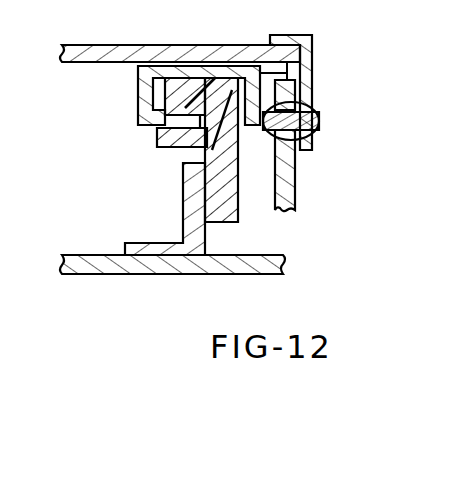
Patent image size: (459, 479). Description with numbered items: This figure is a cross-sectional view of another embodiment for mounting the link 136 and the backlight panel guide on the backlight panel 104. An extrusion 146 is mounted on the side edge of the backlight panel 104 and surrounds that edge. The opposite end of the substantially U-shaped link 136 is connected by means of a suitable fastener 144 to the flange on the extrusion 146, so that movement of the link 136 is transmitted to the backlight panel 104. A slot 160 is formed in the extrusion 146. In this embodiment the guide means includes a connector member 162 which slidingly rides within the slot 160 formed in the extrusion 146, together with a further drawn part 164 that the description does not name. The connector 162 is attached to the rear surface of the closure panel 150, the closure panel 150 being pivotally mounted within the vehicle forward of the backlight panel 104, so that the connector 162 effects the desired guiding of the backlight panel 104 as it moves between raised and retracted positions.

The backlight panel 104 is at (147, 23).
The extrusion 146 is at (313, 65).
The slot 160 is at (165, 98).
The connector member 162 is at (172, 140).
The post 164 is at (197, 210).
The closure panel 150 is at (114, 274).
The fastener 144 is at (319, 122).
The link 136 is at (289, 190).